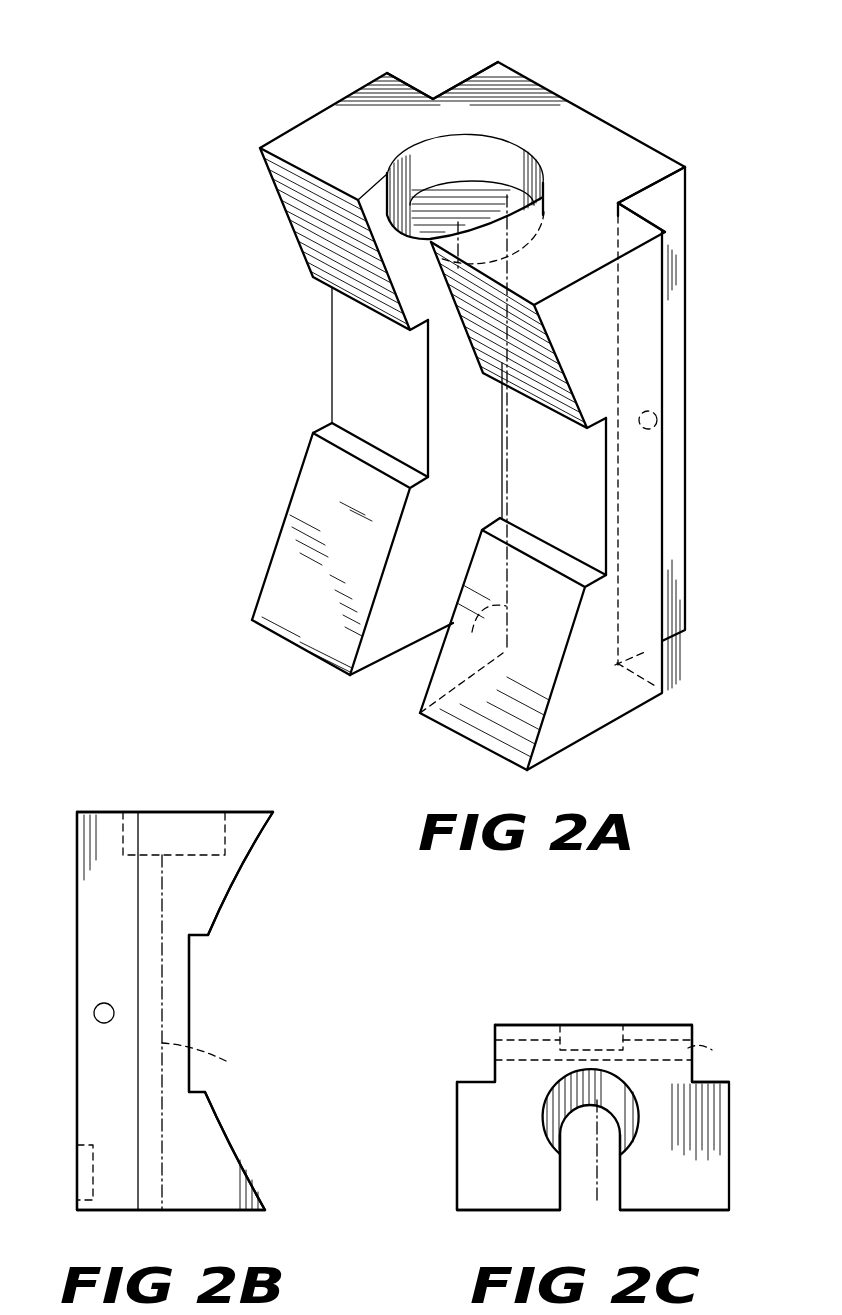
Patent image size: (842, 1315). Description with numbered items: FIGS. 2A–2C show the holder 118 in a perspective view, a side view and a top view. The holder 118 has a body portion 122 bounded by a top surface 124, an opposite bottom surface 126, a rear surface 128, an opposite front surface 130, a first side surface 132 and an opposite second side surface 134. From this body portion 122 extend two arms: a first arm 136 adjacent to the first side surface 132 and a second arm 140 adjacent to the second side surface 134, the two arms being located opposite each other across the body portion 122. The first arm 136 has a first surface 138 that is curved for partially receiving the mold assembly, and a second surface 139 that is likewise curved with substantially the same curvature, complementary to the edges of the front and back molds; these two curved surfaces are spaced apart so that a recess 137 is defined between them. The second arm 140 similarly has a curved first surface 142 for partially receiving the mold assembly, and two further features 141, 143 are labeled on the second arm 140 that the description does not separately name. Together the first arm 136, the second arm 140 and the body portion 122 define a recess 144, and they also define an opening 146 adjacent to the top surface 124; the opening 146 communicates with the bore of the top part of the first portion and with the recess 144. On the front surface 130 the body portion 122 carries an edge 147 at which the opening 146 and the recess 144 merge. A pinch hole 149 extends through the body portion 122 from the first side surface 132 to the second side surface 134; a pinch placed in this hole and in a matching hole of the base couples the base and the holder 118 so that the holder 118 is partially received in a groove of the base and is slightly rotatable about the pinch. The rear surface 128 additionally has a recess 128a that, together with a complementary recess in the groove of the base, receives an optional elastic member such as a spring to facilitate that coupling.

In FIG. 2A, the holder 118 is at (208, 93).
In FIG. 2B, the holder 118 is at (262, 947).
In FIG. 2C, the holder 118 is at (495, 1004).
In FIG. 2A, the body portion 122 is at (498, 62).
In FIG. 2B, the body portion 122 is at (114, 812).
In FIG. 2C, the body portion 122 is at (463, 1124).
In FIG. 2A, the top surface 124 is at (350, 112).
In FIG. 2B, the top surface 124 is at (263, 811).
In FIG. 2A, the bottom surface 126 is at (373, 668).
In FIG. 2B, the bottom surface 126 is at (235, 1212).
In FIG. 2A, the rear surface 128 is at (670, 190).
In FIG. 2B, the rear surface 128 is at (80, 905).
In FIG. 2C, the rear surface 128 is at (700, 1030).
In FIG. 2B, the recess 128a is at (82, 1192).
In FIG. 2C, the recess 128a is at (572, 1030).
In FIG. 2A, the front surface 130 is at (488, 500).
In FIG. 2B, the front surface 130 is at (222, 1064).
In FIG. 2C, the front surface 130 is at (605, 1162).
In FIG. 2A, the first side surface 132 is at (470, 75).
In FIG. 2B, the first side surface 132 is at (103, 1102).
In FIG. 2C, the first side surface 132 is at (497, 1033).
In FIG. 2A, the second side surface 134 is at (672, 203).
In FIG. 2C, the second side surface 134 is at (692, 1045).
In FIG. 2A, the first arm 136 is at (271, 641).
In FIG. 2C, the first arm 136 is at (483, 1212).
In FIG. 2A, the recess 137 is at (358, 350).
In FIG. 2B, the recess 137 is at (192, 1000).
In FIG. 2A, the first surface 138 is at (315, 255).
In FIG. 2B, the first surface 138 is at (232, 885).
In FIG. 2A, the second surface 139 is at (295, 548).
In FIG. 2B, the second surface 139 is at (225, 1148).
In FIG. 2A, the second arm 140 is at (462, 745).
In FIG. 2C, the second arm 140 is at (710, 1212).
In FIG. 2A, the flat central surface right 141 is at (537, 463).
In FIG. 2A, the first surface 142 is at (505, 387).
In FIG. 2A, the lower concave surface right 143 is at (450, 700).
In FIG. 2A, the recess 144 is at (480, 625).
In FIG. 2C, the recess 144 is at (585, 1160).
In FIG. 2A, the opening 146 is at (503, 152).
In FIG. 2B, the opening 146 is at (190, 835).
In FIG. 2C, the opening 146 is at (610, 1085).
In FIG. 2A, the edge 147 is at (510, 195).
In FIG. 2B, the edge 147 is at (155, 832).
In FIG. 2C, the edge 147 is at (595, 1085).
In FIG. 2A, the pinch hole 149 is at (655, 428).
In FIG. 2B, the pinch hole 149 is at (98, 1010).
In FIG. 2C, the pinch hole 149 is at (712, 1050).